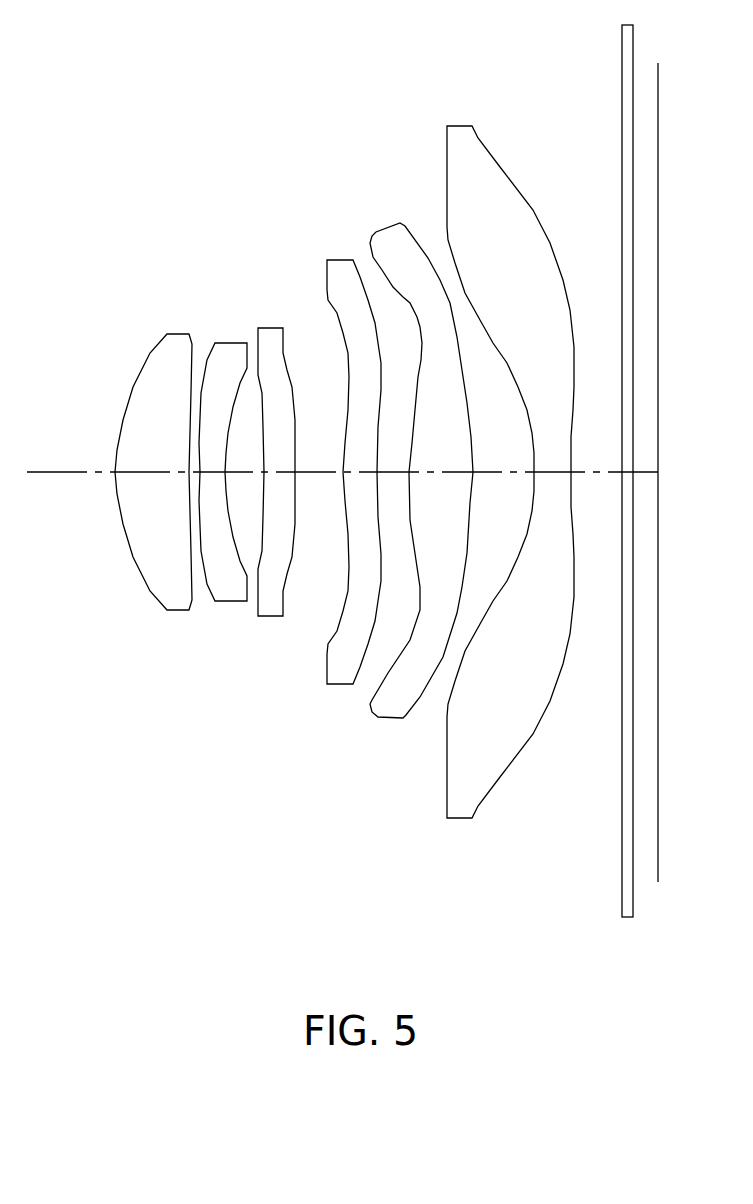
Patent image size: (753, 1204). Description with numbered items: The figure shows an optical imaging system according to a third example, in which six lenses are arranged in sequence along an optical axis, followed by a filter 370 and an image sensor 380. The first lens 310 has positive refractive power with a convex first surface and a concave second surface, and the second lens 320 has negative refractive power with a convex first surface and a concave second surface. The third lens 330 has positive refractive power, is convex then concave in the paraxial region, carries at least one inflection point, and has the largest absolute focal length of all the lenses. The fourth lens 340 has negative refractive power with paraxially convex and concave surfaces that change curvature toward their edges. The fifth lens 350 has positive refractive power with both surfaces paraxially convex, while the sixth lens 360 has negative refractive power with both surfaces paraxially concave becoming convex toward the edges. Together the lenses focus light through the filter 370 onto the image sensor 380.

The first lens 310 is at (178, 610).
The second lens 320 is at (232, 601).
The third lens 330 is at (270, 616).
The fourth lens 340 is at (342, 684).
The fifth lens 350 is at (401, 719).
The sixth lens 360 is at (460, 818).
The filter 370 is at (632, 918).
The image sensor 380 is at (657, 862).